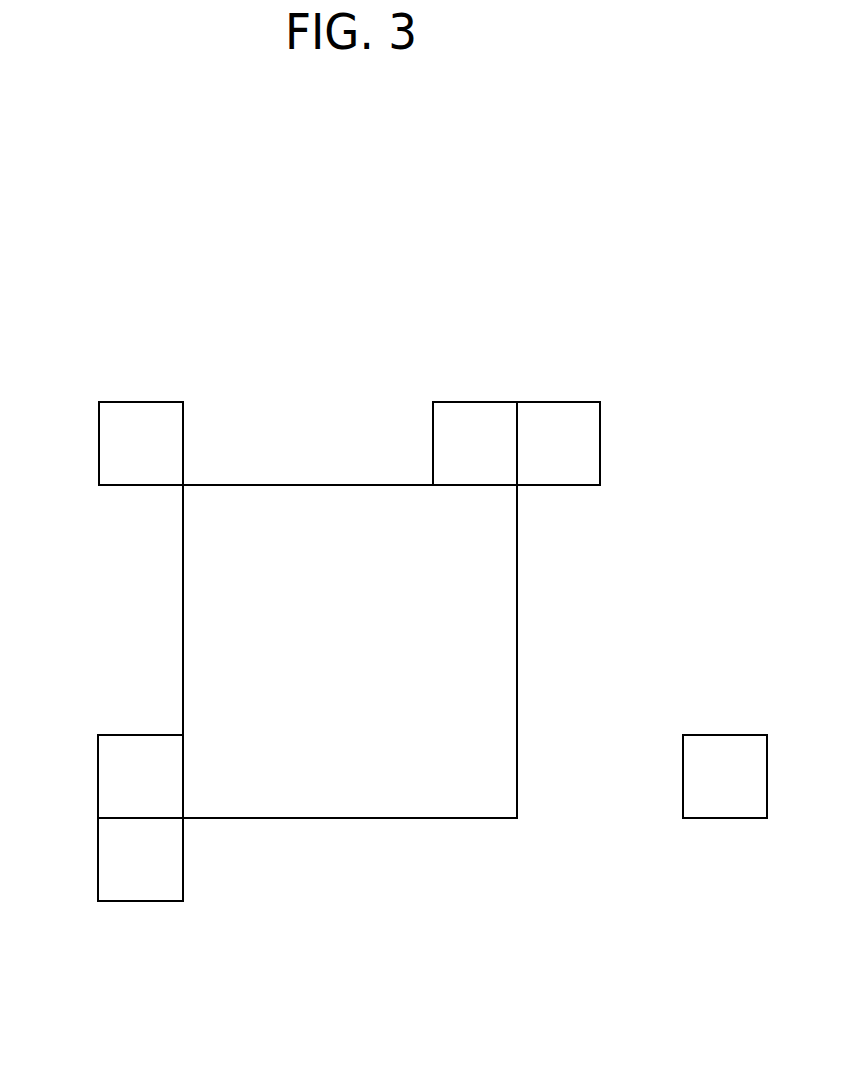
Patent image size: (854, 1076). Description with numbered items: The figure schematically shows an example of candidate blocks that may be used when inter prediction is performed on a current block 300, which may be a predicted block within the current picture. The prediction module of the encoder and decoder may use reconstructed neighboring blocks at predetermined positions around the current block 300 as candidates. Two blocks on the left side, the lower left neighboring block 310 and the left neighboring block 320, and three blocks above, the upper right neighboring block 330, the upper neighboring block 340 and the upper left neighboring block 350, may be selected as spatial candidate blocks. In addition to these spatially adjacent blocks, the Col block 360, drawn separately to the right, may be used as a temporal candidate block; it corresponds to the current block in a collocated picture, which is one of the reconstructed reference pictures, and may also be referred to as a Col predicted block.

The current block 300 is at (506, 556).
The block A0 310 is at (110, 864).
The block A1 320 is at (110, 781).
The block B0 330 is at (556, 413).
The block B1 340 is at (472, 413).
The block B2 350 is at (138, 413).
The Col block 360 is at (747, 733).